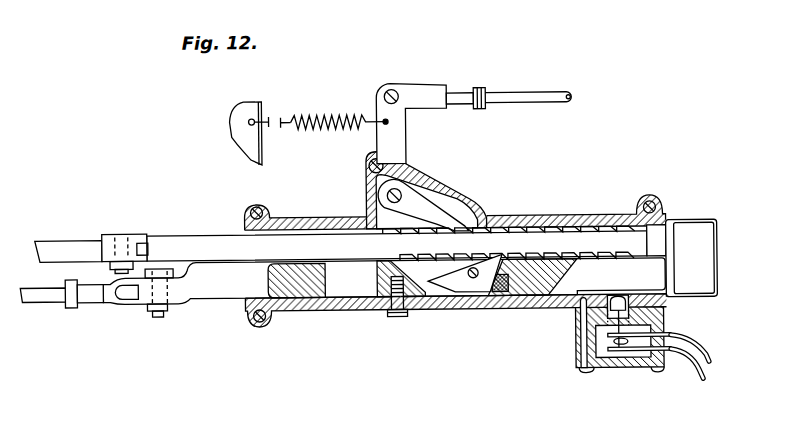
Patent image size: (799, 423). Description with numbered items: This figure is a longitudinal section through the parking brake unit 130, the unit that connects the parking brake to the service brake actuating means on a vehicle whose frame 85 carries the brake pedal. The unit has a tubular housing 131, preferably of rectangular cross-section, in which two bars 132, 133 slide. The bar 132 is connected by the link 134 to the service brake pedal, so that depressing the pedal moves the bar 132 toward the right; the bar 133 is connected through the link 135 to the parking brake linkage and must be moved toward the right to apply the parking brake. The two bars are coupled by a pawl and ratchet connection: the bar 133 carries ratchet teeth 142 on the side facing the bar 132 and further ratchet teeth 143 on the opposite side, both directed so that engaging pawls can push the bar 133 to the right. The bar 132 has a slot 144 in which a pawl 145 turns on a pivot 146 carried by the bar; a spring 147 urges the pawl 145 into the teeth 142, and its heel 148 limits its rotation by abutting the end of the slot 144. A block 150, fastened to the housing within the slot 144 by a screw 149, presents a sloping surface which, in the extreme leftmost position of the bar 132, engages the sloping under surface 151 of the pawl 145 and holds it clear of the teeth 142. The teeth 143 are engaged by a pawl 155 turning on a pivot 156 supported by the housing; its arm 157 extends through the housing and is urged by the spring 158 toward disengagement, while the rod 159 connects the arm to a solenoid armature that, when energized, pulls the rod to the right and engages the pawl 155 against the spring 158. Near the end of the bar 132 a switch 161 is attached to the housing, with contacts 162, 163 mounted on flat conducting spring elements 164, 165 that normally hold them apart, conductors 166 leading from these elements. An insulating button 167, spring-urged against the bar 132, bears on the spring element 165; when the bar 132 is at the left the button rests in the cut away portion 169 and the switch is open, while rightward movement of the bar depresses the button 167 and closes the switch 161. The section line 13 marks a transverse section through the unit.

The section line 13- 13 is at (503, 216).
The frame 85 is at (238, 140).
The parking brake unit 130 is at (300, 331).
The tubular housing 131 is at (290, 216).
The bar 132 is at (253, 321).
The bar 133 is at (202, 232).
The link 134 is at (50, 298).
The link 135 is at (68, 237).
The ratchet teeth 142 is at (528, 216).
The ratchet teeth 143 is at (592, 216).
The slot 144 is at (290, 296).
The pawl 145 is at (489, 300).
The pivot 146 is at (443, 295).
The spring 147 is at (497, 302).
The heel 148 is at (477, 293).
The screw 149 is at (375, 314).
The block 150 is at (397, 258).
The sloping under surface 151 is at (403, 316).
The pawl 155 is at (442, 205).
The pivot 156 is at (385, 194).
The arm 157 is at (408, 141).
The spring 158 is at (338, 108).
The rod 159 is at (563, 88).
The switch 161 is at (559, 384).
The electrical contact 162 is at (613, 348).
The electrical contact 163 is at (613, 337).
The spring element 164 is at (627, 352).
The spring element 165 is at (641, 368).
The conductors 166 is at (688, 378).
The button 167 is at (612, 297).
The cut away portion 169 is at (645, 291).